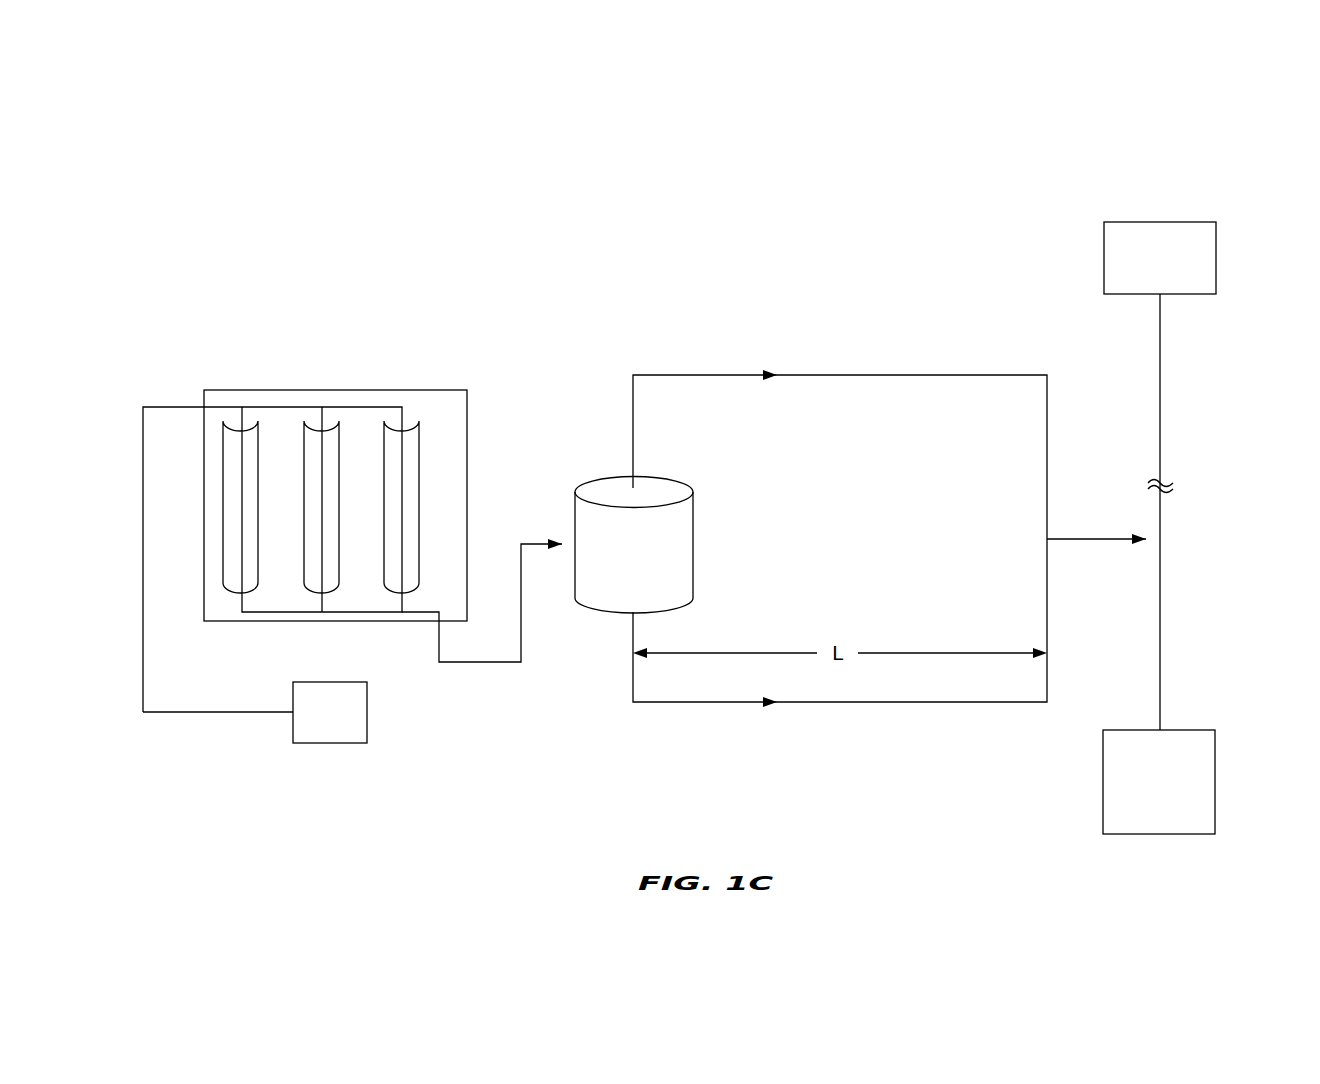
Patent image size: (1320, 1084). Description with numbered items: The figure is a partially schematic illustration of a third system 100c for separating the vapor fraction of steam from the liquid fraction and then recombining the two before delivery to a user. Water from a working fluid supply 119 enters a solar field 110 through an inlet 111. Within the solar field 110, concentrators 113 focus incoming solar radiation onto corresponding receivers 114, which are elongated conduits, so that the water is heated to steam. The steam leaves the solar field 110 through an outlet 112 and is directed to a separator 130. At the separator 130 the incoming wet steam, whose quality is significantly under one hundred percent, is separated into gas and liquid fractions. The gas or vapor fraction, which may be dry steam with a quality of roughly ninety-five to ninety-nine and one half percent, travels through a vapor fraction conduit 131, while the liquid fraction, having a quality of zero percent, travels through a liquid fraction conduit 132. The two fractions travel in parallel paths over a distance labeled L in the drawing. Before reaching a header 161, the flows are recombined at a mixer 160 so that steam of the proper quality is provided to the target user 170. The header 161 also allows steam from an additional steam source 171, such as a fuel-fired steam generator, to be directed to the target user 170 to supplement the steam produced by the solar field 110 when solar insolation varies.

The third system 100c is at (1030, 173).
The solar field 110 is at (428, 390).
The inlet 111 is at (200, 402).
The outlet 112 is at (435, 626).
The concentrators 113 is at (291, 430).
The receivers 114 is at (262, 438).
The working fluid supply 119 is at (330, 743).
The separator 130 is at (693, 545).
The vapor fraction conduit 131 is at (918, 374).
The liquid fraction conduit 132 is at (923, 703).
The mixer 160 is at (1047, 539).
The header 161 is at (1161, 699).
The target user 170 is at (1216, 782).
The additional steam source 171 is at (1217, 253).